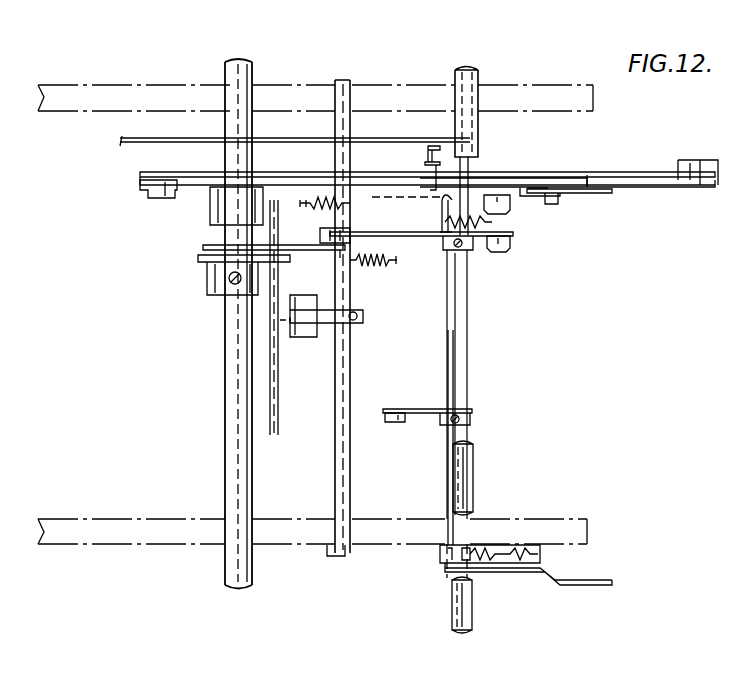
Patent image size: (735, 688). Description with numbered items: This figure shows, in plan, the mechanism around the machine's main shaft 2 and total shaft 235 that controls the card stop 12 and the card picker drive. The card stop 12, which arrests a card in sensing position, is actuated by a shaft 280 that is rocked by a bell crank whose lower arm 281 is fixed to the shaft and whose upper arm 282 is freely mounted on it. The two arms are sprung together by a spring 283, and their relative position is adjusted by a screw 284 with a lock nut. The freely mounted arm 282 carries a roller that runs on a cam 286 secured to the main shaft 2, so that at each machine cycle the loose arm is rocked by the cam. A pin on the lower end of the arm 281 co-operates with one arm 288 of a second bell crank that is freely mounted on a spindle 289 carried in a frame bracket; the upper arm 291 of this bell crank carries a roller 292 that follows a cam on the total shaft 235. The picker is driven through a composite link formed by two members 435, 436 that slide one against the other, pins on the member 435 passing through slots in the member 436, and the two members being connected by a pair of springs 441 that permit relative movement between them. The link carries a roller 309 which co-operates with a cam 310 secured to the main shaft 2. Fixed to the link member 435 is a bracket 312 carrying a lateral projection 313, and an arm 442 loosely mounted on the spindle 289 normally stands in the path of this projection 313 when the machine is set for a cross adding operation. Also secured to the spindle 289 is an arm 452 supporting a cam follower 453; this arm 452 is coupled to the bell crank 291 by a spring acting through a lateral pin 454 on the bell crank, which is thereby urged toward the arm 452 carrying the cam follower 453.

The main shaft 2 is at (225, 363).
The card stop 12 is at (278, 415).
The total shaft 235 is at (478, 80).
The shaft 280 is at (350, 363).
The lower arm 281 is at (328, 236).
The upper arm 282 is at (332, 246).
The spring 283 is at (365, 265).
The screw 284 is at (345, 262).
The cam 286 is at (200, 258).
The arm 288 is at (433, 238).
The spindle 289 is at (448, 470).
The upper arm 291 is at (472, 255).
The roller 292 is at (500, 252).
The roller 309 is at (140, 190).
The cam 310 is at (208, 196).
The bracket 312 is at (582, 193).
The lateral projection 313 is at (532, 196).
The link member 435 is at (497, 177).
The link member 436 is at (222, 172).
The springs 441 is at (420, 197).
The arm 442 is at (505, 200).
The arm 452 is at (425, 400).
The cam follower 453 is at (396, 422).
The lateral pin 454 is at (445, 215).